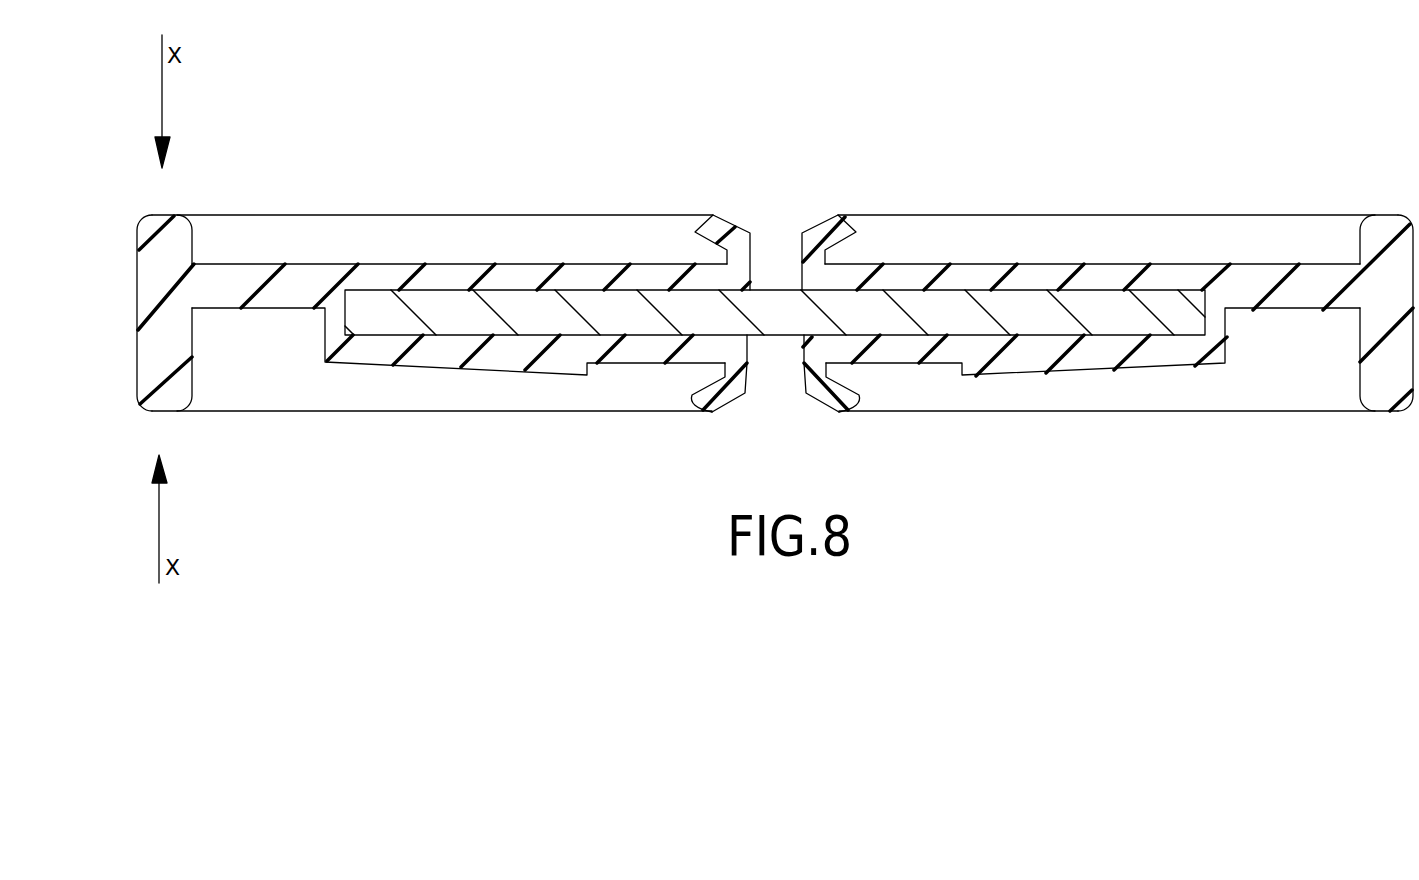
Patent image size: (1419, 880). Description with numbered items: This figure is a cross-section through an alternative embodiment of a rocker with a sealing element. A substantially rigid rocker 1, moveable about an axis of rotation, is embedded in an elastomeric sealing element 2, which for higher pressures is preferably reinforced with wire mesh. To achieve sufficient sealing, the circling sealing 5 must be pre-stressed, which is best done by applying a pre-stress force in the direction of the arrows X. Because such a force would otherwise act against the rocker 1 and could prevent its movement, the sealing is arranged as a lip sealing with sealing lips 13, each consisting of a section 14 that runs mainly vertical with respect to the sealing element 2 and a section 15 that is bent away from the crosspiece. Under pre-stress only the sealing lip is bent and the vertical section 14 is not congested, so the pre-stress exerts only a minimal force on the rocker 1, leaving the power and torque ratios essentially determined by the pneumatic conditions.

The rocker 1 is at (920, 313).
The sealing element 2 is at (275, 272).
The circling sealing 5 is at (158, 242).
The sealing lips 13 is at (705, 225).
The section 14 is at (743, 393).
The section 15 is at (705, 400).